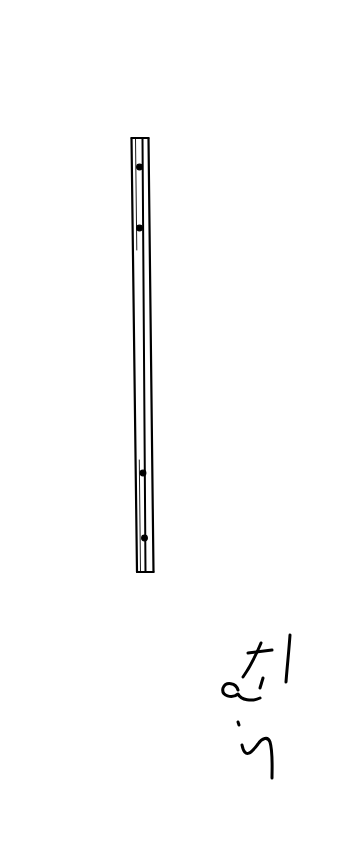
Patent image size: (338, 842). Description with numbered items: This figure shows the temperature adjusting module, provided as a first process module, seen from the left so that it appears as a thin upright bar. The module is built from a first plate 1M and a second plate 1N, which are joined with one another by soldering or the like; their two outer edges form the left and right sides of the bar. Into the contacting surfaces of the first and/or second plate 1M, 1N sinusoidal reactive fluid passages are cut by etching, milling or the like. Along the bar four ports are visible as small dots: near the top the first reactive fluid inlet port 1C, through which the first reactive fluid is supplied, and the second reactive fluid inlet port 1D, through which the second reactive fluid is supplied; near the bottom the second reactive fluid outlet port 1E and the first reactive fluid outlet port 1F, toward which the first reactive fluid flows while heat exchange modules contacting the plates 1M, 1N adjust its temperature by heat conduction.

The first plate 1M is at (132, 138).
The second plate 1N is at (148, 138).
The first reactive fluid inlet port 1C is at (140, 167).
The second reactive fluid inlet port 1D is at (140, 228).
The second reactive fluid outlet port 1E is at (143, 473).
The first reactive fluid outlet port 1F is at (144, 538).